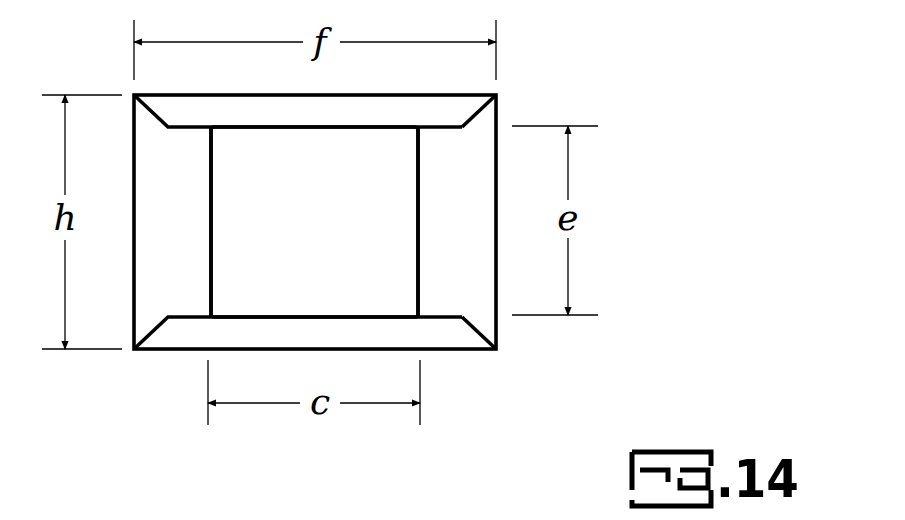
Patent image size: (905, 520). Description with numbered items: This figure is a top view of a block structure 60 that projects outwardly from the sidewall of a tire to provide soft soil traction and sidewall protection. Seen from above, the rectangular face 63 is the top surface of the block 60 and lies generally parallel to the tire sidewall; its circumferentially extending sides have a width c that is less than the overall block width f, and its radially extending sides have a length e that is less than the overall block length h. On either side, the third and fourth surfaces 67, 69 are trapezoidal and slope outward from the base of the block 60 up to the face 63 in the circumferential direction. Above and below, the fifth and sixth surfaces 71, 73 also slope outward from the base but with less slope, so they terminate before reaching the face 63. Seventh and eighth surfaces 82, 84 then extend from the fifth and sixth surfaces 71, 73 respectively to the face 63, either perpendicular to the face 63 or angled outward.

The block structure 60 is at (545, 86).
The face 63 is at (338, 227).
The third surface 67 is at (456, 235).
The fourth surface 69 is at (172, 241).
The fifth surface 71 is at (401, 110).
The sixth surface 73 is at (201, 334).
The seventh surface 82 is at (251, 125).
The eighth surface 84 is at (405, 318).